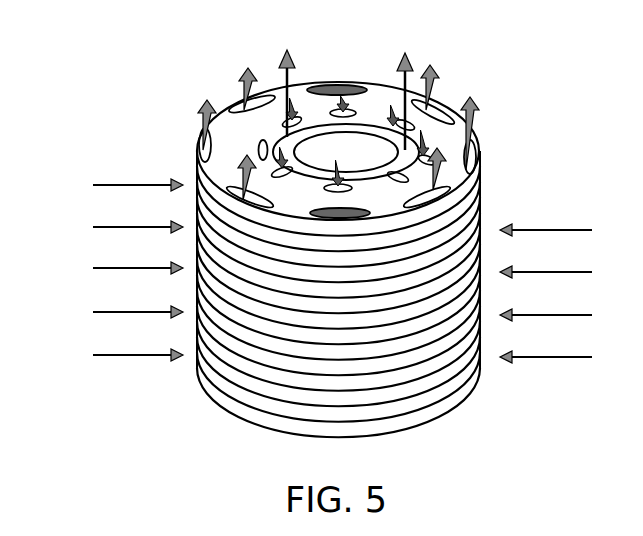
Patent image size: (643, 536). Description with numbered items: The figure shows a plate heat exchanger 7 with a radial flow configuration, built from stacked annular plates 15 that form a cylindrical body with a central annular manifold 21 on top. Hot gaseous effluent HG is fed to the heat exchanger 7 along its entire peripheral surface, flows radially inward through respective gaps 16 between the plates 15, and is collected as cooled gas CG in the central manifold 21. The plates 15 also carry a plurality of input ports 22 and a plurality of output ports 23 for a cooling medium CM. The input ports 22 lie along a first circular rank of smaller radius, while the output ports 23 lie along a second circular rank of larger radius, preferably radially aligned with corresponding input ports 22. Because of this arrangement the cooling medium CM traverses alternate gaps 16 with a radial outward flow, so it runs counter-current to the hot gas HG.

The plate heat exchanger 7 is at (342, 240).
The stacked annular plates 15 is at (430, 403).
The gaps 16 is at (373, 410).
The central annular manifold 21 is at (364, 127).
The input ports 22 is at (258, 150).
The output ports 23 is at (477, 157).